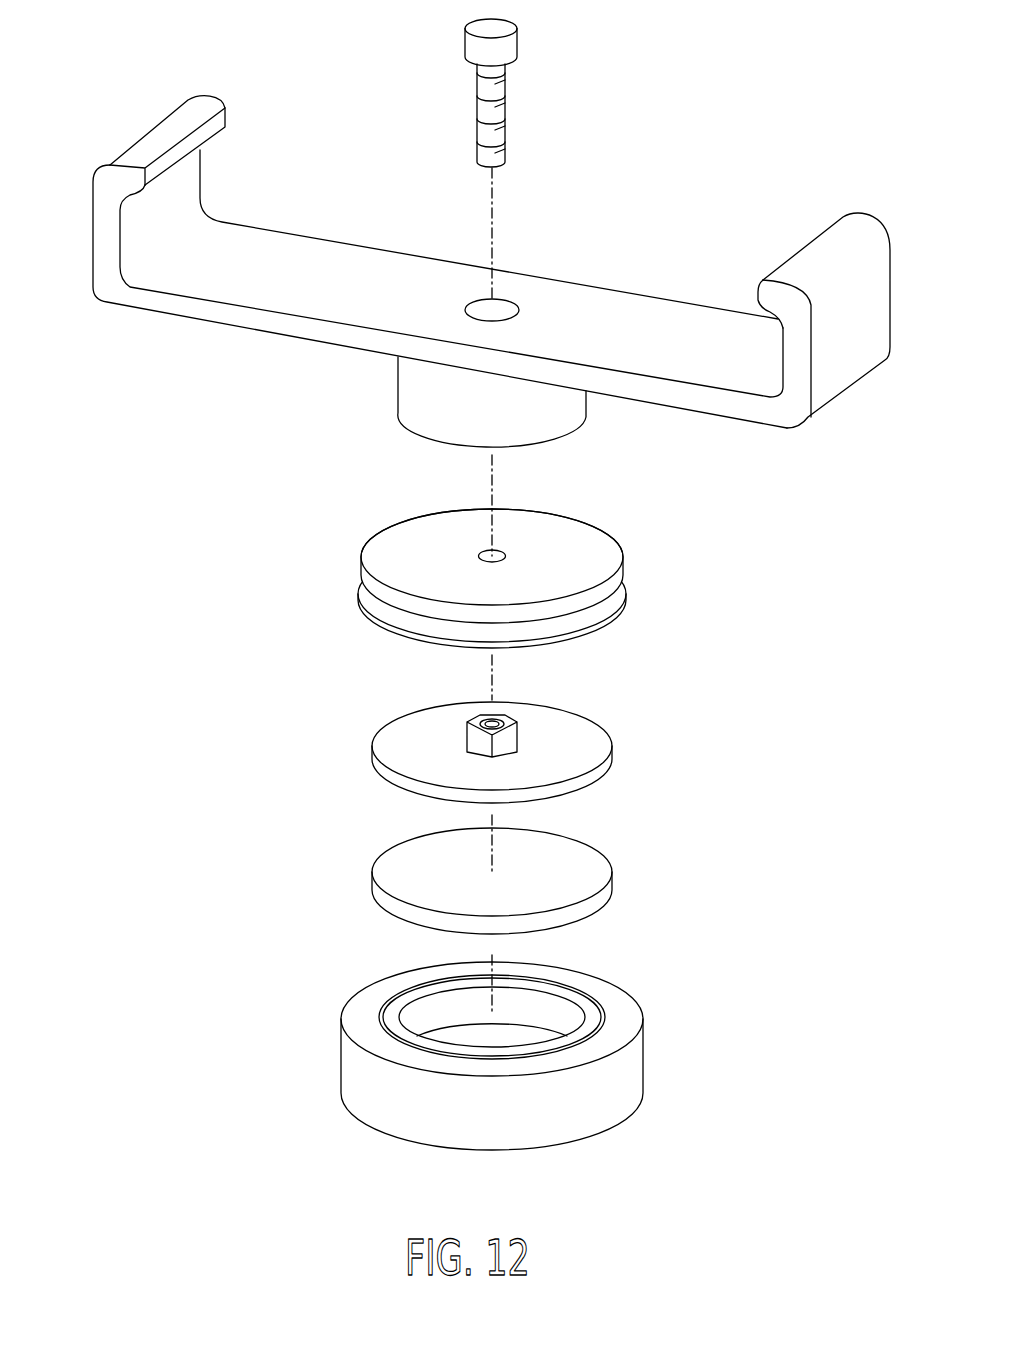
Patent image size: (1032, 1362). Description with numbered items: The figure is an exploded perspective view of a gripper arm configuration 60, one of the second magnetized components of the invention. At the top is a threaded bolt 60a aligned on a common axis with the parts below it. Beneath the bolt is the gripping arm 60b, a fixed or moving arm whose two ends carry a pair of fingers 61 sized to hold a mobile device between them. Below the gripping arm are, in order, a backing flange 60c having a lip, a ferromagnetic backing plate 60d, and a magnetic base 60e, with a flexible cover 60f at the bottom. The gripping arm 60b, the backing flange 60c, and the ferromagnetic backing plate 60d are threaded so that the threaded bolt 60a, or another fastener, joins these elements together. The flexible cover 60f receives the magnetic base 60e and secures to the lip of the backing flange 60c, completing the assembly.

The gripper arm configuration 60 is at (87, 14).
The threaded bolt 60a is at (496, 110).
The gripping arm 60b is at (643, 313).
The backing flange 60c is at (590, 538).
The ferromagnetic backing plate 60d is at (587, 740).
The magnetic base 60e is at (587, 865).
The flexible cover 60f is at (628, 1068).
The fingers 61 is at (155, 130).